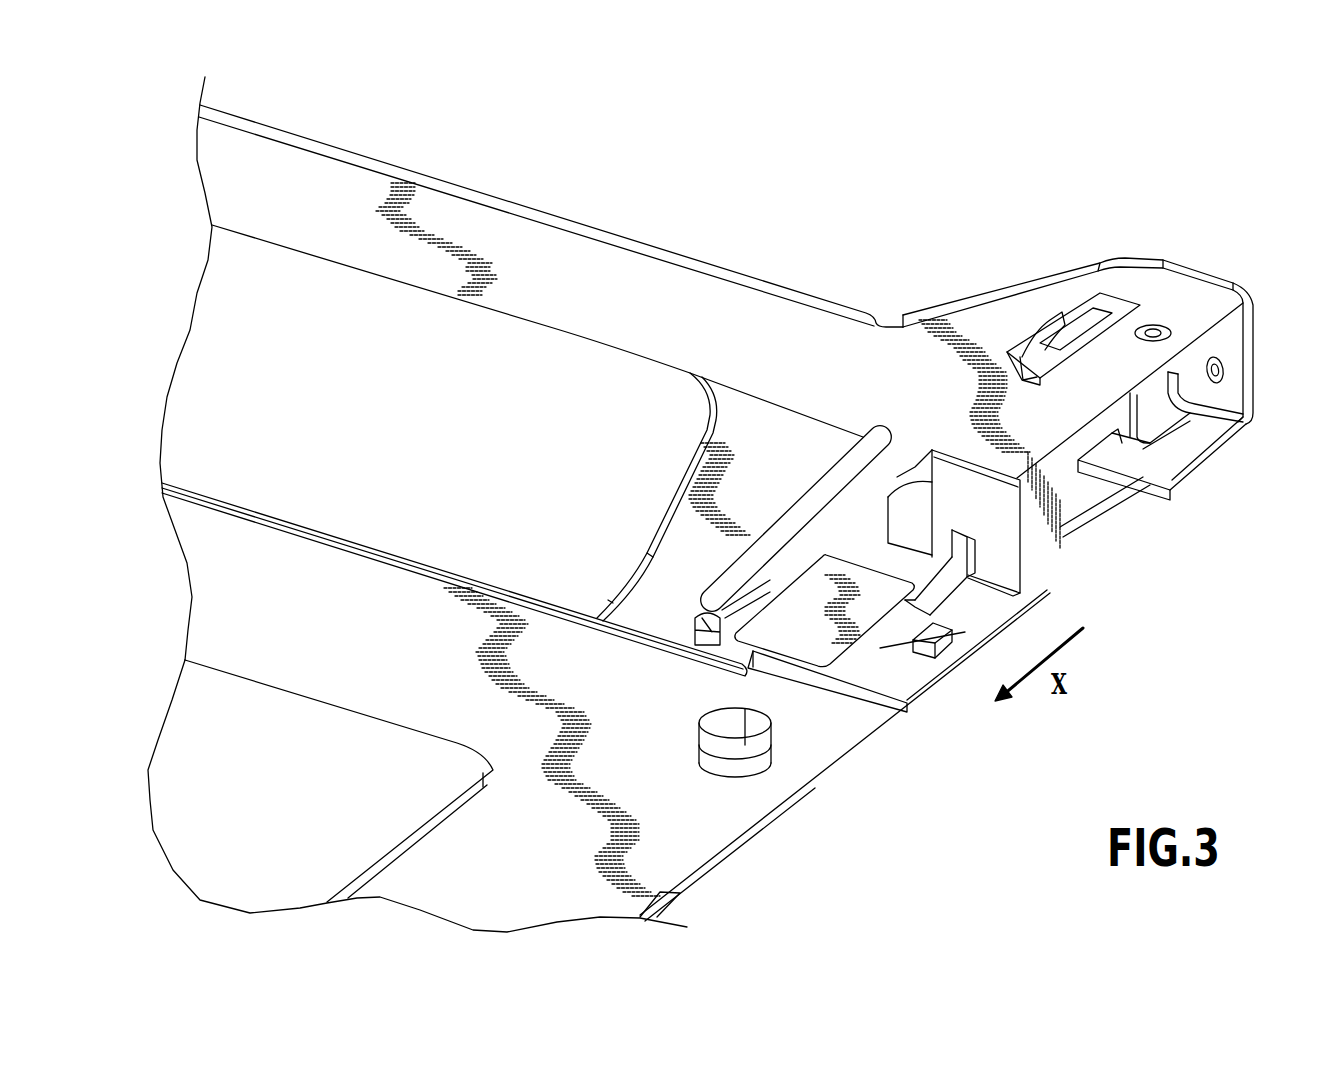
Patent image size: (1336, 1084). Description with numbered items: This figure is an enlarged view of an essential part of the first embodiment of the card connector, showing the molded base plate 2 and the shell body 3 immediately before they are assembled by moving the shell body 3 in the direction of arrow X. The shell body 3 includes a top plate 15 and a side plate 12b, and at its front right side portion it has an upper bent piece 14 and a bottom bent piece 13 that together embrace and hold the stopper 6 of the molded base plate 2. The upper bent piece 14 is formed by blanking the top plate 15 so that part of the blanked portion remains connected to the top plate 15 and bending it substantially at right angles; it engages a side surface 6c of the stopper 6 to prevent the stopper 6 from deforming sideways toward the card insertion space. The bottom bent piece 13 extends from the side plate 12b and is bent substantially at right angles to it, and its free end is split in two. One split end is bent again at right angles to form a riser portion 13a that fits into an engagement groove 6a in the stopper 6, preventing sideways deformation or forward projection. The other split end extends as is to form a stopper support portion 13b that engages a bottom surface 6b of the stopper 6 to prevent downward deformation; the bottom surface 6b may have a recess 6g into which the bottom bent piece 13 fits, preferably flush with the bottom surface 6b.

The molded base plate 2 is at (710, 820).
The shell body 3 is at (795, 272).
The top plate 15 is at (648, 265).
The side plate 12b is at (1255, 325).
The upper bent piece 14 is at (1057, 338).
The bottom bent piece 13 is at (1180, 447).
The riser portion 13a is at (1160, 388).
The stopper support portion 13b is at (1123, 465).
The stopper 6 is at (1002, 564).
The engagement groove 6a is at (965, 555).
The bottom surface 6b is at (867, 680).
The side surface 6c is at (917, 457).
The recess 6g is at (903, 643).